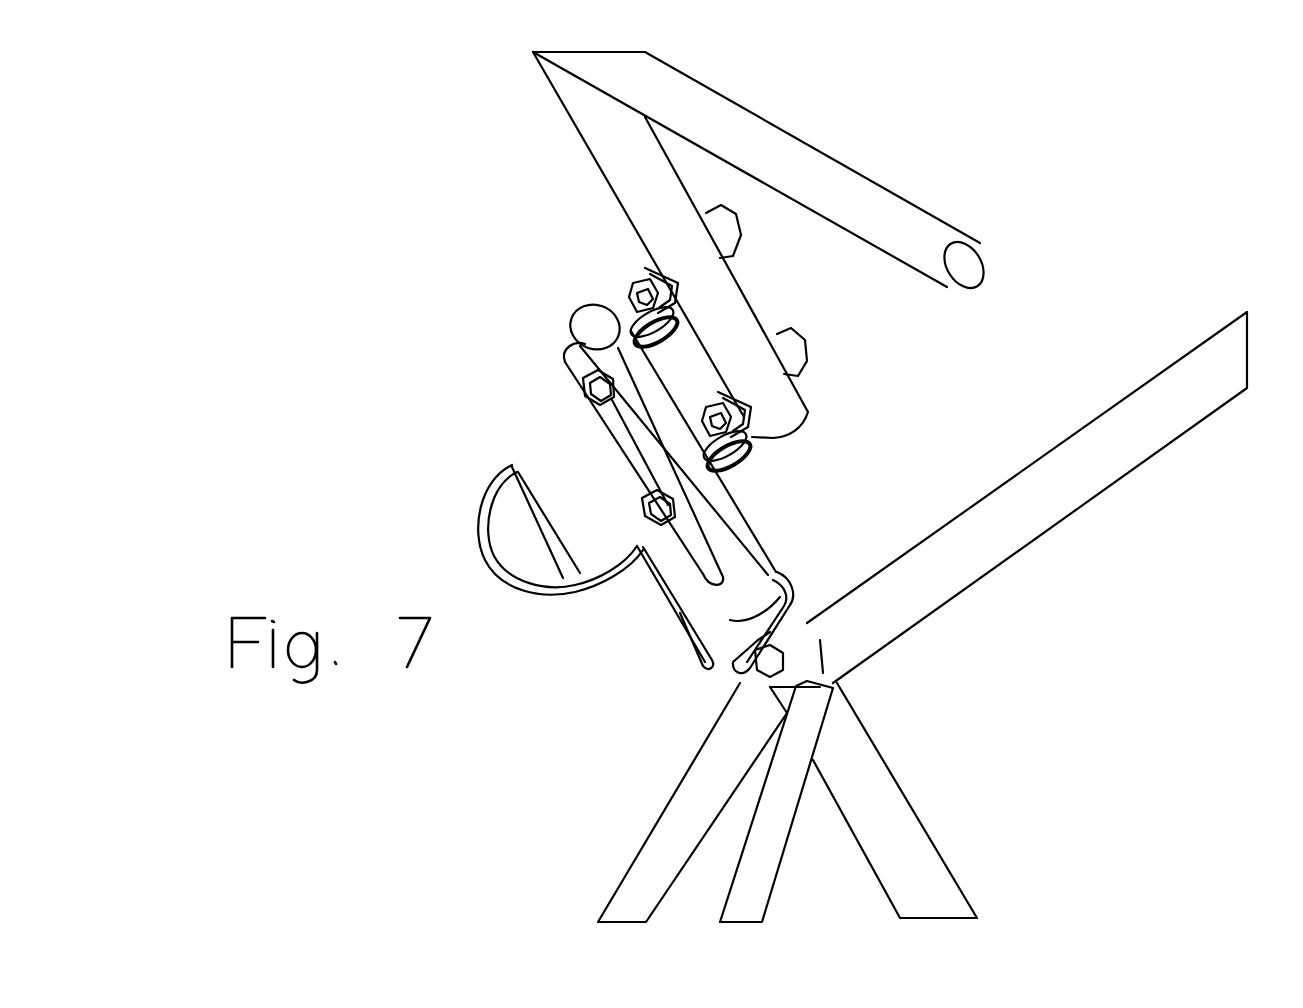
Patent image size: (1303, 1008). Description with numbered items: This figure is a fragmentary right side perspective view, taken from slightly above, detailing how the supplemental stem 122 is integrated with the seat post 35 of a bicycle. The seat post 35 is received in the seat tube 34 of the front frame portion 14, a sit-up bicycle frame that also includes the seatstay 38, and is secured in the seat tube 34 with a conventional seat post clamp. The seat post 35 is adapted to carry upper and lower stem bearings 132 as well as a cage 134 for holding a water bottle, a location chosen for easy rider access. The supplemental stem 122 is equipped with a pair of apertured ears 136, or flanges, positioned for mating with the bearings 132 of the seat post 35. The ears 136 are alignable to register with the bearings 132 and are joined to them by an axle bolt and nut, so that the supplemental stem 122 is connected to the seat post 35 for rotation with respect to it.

The front frame portion 14 is at (1035, 673).
The seat tube 34 is at (897, 777).
The seat post 35 is at (573, 325).
The seatstay 38 is at (677, 800).
The supplemental stem 122 is at (607, 178).
The stem bearings 132 is at (683, 333).
The cage 134 is at (482, 505).
The ears 136 is at (655, 272).